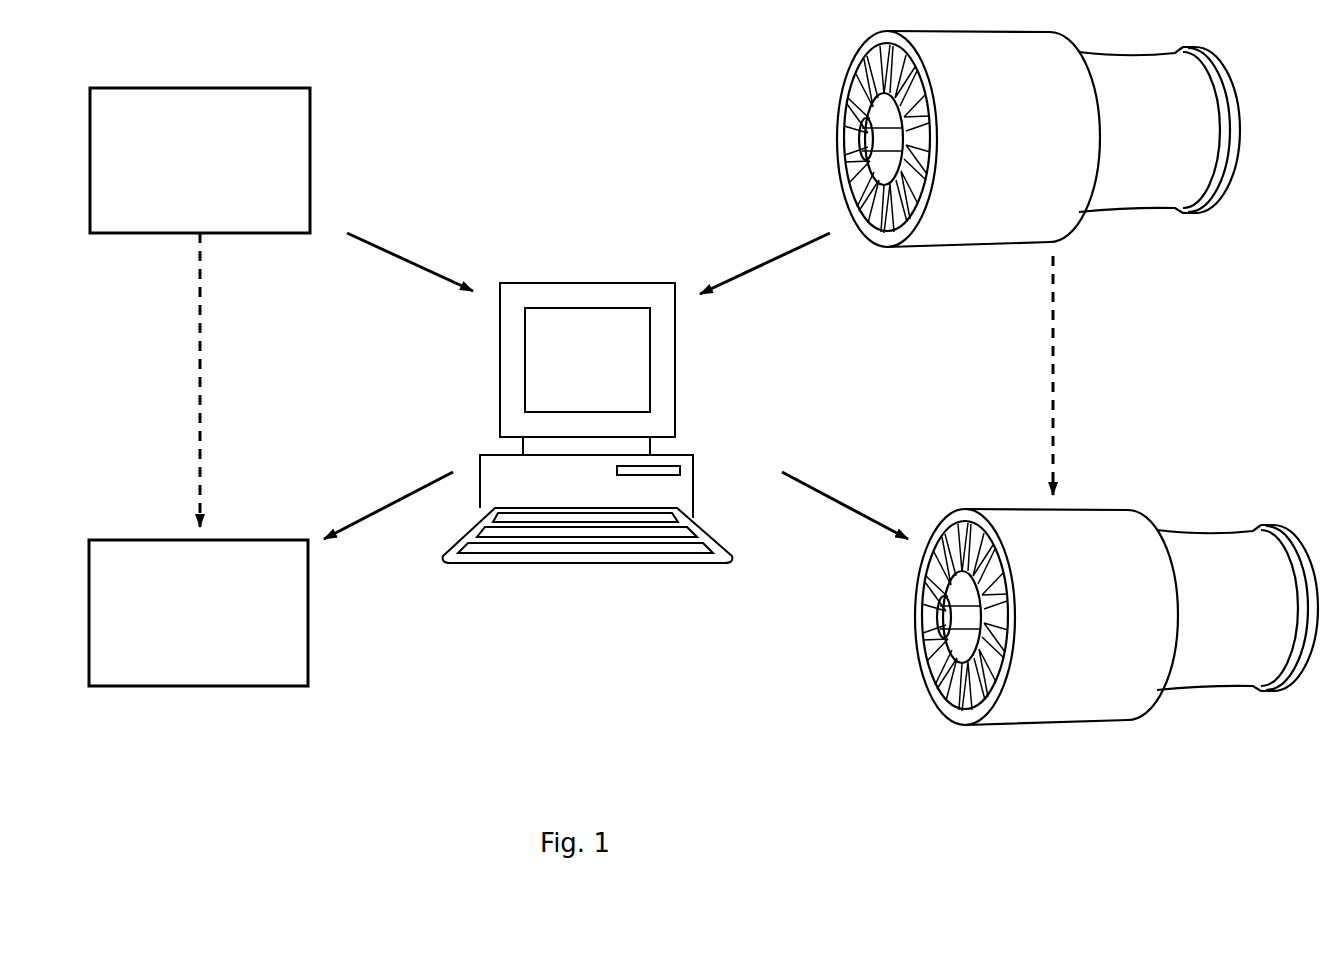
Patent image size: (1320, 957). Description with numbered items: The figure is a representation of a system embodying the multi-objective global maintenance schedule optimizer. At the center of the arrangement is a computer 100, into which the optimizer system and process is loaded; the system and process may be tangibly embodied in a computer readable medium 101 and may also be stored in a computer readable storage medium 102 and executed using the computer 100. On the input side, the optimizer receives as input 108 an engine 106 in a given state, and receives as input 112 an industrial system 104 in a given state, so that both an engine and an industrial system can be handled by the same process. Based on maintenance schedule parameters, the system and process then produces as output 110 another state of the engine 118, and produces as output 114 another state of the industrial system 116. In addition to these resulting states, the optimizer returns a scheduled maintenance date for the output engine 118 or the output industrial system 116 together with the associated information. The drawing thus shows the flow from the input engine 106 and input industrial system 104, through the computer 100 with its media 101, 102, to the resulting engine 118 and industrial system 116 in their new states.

The computer 100 is at (497, 403).
The computer readable medium 101 is at (683, 467).
The computer readable storage medium 102 is at (650, 496).
The industrial system 104 is at (200, 160).
The engine 106 is at (806, 108).
The input 108 is at (782, 244).
The output 110 is at (841, 500).
The input 112 is at (426, 262).
The output 114 is at (393, 512).
The industrial system 116 is at (198, 613).
The engine 118 is at (874, 664).